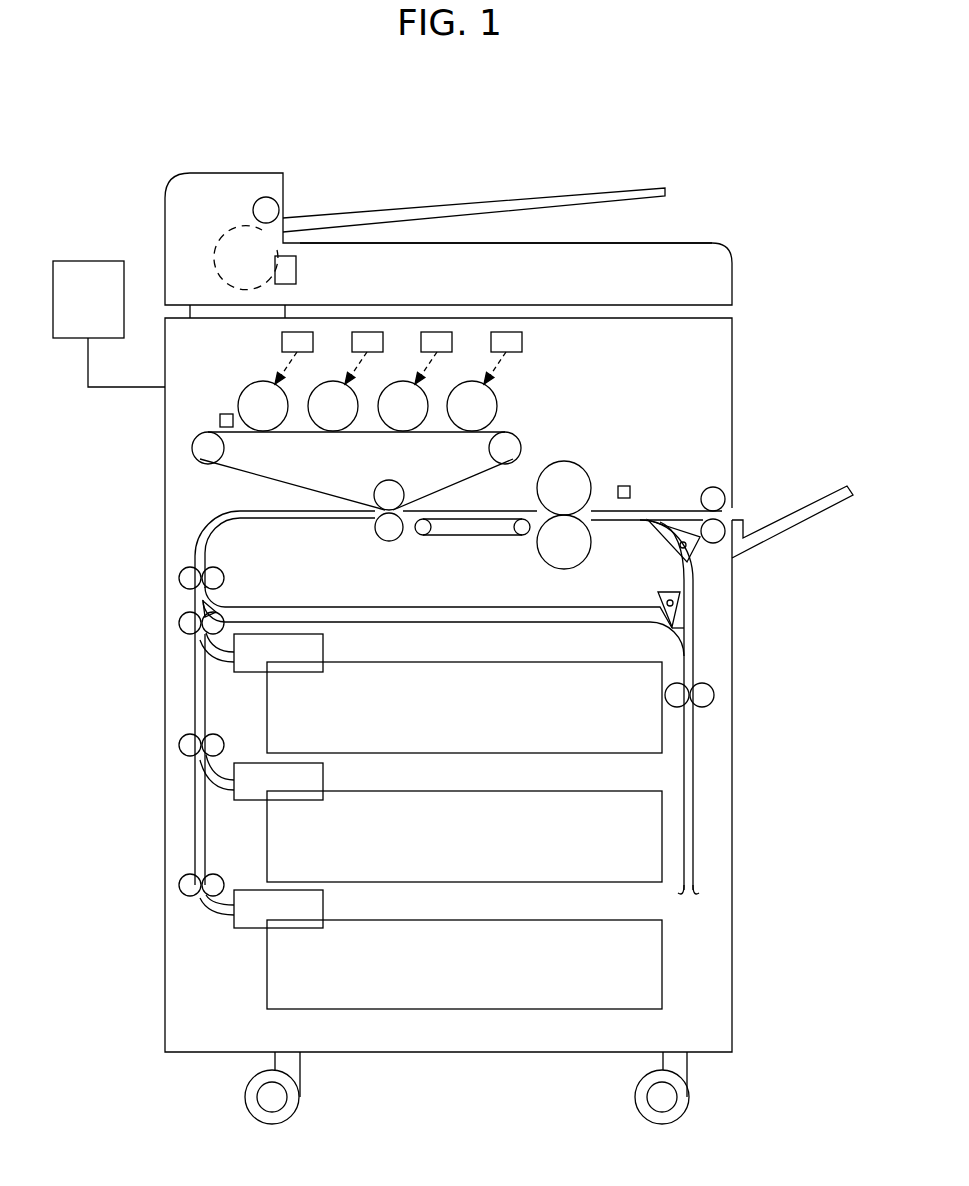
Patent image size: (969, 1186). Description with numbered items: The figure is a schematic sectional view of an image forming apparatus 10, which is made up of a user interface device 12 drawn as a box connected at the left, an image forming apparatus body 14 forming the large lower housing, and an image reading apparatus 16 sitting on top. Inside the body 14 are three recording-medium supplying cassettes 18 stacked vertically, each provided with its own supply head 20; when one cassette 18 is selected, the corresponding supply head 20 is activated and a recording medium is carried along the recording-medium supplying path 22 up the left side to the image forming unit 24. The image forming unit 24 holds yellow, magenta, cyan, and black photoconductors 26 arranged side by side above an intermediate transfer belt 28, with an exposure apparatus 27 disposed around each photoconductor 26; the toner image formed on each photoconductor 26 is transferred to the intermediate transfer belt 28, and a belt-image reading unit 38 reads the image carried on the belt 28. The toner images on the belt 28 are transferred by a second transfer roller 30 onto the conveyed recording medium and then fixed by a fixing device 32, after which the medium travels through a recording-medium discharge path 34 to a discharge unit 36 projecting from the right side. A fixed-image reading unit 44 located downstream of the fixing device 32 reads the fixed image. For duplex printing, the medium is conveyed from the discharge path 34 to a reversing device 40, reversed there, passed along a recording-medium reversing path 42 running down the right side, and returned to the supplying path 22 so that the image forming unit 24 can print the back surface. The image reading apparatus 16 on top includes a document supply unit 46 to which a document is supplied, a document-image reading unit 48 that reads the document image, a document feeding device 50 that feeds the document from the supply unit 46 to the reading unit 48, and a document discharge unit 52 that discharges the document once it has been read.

The image forming apparatus 10 is at (618, 123).
The user interface device 12 is at (111, 261).
The image forming apparatus body 14 is at (155, 480).
The image reading apparatus 16 is at (745, 272).
The recording-medium supplying cassette 18 is at (572, 753).
The supply head 20 is at (250, 673).
The recording-medium supplying path 22 is at (220, 527).
The image forming unit 24 is at (352, 438).
The photoconductor 26 is at (488, 397).
The exposure apparatus 27 is at (523, 343).
The intermediate transfer belt 28 is at (248, 480).
The second transfer roller 30 is at (393, 541).
The fixing device 32 is at (591, 485).
The recording-medium discharge path 34 is at (634, 524).
The discharge unit 36 is at (808, 500).
The belt-image reading unit 38 is at (226, 413).
The reversing device 40 is at (525, 610).
The recording-medium reversing path 42 is at (690, 768).
The fixed-image reading unit 44 is at (632, 492).
The document supply unit 46 is at (401, 208).
The document-image reading unit 48 is at (297, 270).
The document feeding device 50 is at (231, 173).
The document discharge unit 52 is at (666, 243).